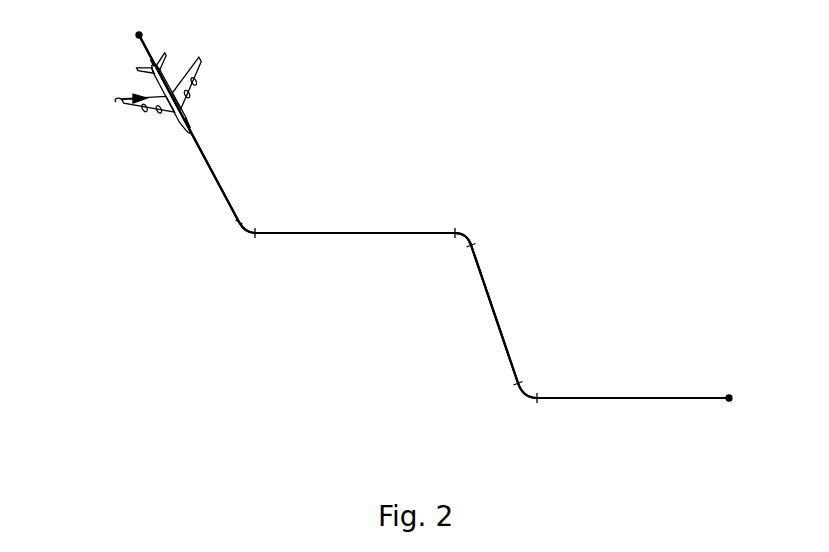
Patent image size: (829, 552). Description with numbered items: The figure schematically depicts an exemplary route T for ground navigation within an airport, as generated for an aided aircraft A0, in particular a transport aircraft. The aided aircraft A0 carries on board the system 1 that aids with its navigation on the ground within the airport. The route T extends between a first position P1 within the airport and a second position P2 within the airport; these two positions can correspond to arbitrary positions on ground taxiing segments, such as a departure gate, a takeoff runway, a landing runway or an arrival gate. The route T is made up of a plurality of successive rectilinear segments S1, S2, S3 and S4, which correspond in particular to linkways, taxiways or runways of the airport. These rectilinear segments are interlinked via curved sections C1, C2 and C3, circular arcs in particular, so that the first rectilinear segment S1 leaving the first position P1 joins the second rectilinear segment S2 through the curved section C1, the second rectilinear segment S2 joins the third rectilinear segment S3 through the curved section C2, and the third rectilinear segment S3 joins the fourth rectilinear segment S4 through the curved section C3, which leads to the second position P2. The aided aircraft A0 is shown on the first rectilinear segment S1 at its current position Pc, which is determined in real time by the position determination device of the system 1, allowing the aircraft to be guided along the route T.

The route T is at (208, 214).
The rectilinear segment S1 is at (200, 153).
The rectilinear segment S2 is at (356, 235).
The rectilinear segment S3 is at (495, 306).
The rectilinear segment S4 is at (635, 401).
The curved section C1 is at (243, 236).
The curved section C2 is at (468, 231).
The curved section C3 is at (523, 400).
The first position P1 is at (135, 38).
The second position P2 is at (727, 402).
The aided aircraft A0 is at (174, 97).
The system 1 is at (194, 124).
The current position Pc is at (114, 101).